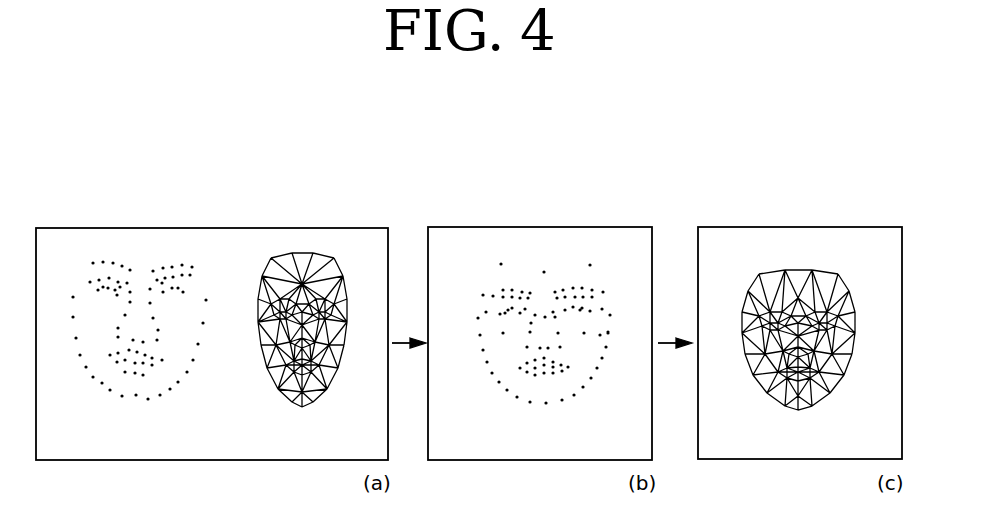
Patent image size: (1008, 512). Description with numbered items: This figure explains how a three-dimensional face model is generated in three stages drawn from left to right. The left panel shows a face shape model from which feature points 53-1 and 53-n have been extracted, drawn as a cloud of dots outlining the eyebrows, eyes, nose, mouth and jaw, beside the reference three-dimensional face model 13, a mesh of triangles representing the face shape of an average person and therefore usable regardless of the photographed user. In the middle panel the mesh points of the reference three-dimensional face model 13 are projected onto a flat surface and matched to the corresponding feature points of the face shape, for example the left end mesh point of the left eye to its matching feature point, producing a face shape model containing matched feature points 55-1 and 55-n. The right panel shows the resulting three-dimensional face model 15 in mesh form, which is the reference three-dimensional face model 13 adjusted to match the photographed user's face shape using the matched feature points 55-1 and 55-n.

The feature point 53-n is at (73, 295).
The feature point 53-1 is at (153, 269).
The reference 3D face model 13 is at (302, 254).
The matched feature point 55-n is at (483, 293).
The matched feature point 55-1 is at (590, 264).
The 3D face model 15 is at (819, 270).